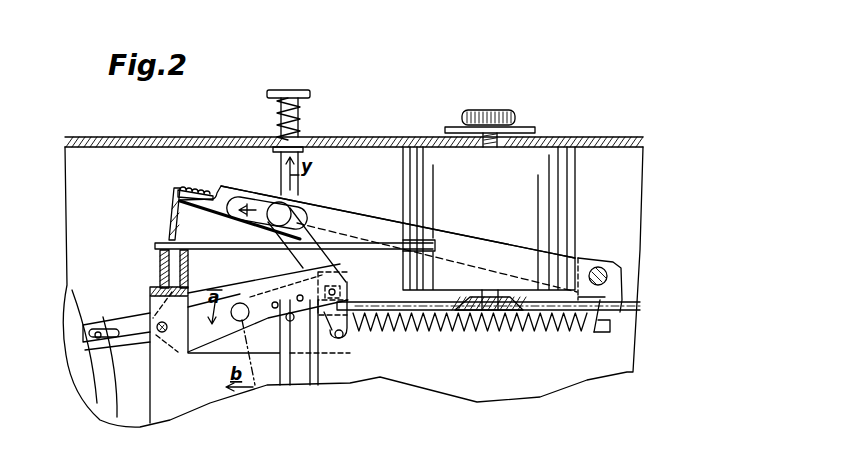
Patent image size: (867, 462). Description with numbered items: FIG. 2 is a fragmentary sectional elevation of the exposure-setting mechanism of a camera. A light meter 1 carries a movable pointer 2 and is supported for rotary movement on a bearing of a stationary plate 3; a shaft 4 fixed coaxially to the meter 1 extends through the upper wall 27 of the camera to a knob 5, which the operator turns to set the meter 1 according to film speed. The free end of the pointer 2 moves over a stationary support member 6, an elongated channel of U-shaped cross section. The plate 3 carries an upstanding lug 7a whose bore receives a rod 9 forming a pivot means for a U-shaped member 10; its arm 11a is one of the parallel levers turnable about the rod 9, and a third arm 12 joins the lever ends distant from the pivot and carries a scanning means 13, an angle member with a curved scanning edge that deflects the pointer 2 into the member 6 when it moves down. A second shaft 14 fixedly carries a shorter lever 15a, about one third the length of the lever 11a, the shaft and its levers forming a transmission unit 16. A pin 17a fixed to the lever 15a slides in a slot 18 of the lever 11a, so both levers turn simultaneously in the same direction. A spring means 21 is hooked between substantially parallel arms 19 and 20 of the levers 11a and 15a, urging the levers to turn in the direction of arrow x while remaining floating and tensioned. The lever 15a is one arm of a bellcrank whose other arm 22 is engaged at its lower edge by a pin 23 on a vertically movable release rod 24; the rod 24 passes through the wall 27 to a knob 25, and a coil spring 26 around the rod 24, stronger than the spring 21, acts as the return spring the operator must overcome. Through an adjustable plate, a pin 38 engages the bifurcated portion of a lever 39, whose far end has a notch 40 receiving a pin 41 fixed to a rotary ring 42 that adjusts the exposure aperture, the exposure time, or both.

The light meter 1 is at (560, 160).
The pointer 2 is at (155, 244).
The stationary plate 3 is at (552, 308).
The shaft 4 is at (513, 130).
The knob 5 is at (477, 115).
The support member 6 is at (160, 280).
The lug 7a is at (622, 286).
The rod 9 is at (600, 269).
The U-shaped member 10 is at (378, 195).
The arm 11a is at (362, 220).
The third arm 12 is at (187, 184).
The scanning means 13 is at (173, 220).
The shaft 14 is at (341, 292).
The lever 15a is at (305, 262).
The transmission unit 16 is at (355, 313).
The pin 17a is at (277, 208).
The slot 18 is at (242, 220).
The arm 19 is at (596, 321).
The arm 20 is at (337, 340).
The spring means 21 is at (510, 335).
The arm 22 is at (263, 283).
The pin 23 is at (291, 321).
The rod 24 is at (288, 378).
The knob 25 is at (300, 90).
The coil spring 26 is at (300, 121).
The upper wall 27 is at (273, 137).
The pin 38 is at (236, 318).
The lever 39 is at (140, 322).
The notch 40 is at (108, 330).
The pin 41 is at (107, 348).
The rotary ring 42 is at (77, 290).